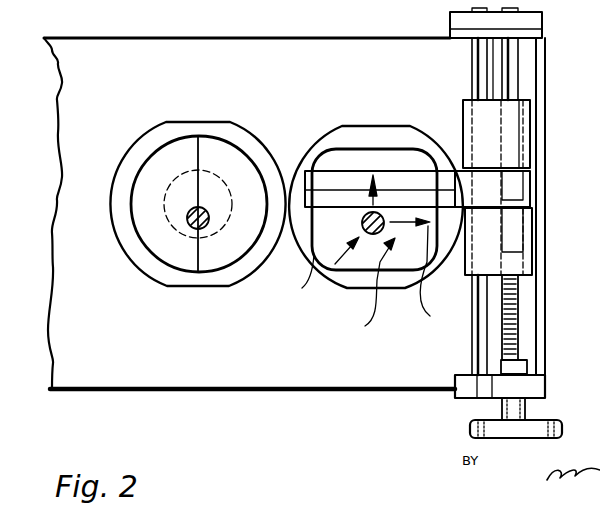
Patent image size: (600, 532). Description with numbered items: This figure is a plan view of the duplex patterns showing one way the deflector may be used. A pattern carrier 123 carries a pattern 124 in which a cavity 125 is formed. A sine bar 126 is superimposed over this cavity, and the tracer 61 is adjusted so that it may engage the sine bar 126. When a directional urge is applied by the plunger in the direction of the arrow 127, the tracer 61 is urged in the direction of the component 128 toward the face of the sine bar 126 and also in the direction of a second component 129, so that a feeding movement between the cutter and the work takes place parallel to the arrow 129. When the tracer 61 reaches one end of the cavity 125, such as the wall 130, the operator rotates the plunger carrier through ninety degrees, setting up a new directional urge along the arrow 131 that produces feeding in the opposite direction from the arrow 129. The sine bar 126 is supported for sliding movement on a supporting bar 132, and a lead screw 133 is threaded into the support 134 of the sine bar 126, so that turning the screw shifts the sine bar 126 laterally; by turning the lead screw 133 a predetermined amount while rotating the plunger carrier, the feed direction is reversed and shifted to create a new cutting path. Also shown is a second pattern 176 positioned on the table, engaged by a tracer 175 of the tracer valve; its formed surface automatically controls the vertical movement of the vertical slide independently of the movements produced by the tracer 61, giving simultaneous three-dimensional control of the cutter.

The tracer 61 is at (300, 279).
The pattern carrier 123 is at (163, 380).
The pattern 124 is at (377, 97).
The cavity 125 is at (438, 279).
The sine bar 126 is at (318, 200).
The arrow 127 is at (335, 264).
The component 128 is at (377, 188).
The arrow 129 is at (402, 222).
The wall 130 is at (432, 250).
The arrow 131 is at (365, 287).
The supporting bar 132 is at (471, 60).
The lead screw 133 is at (524, 306).
The support 134 is at (533, 250).
The tracer 175 is at (189, 226).
The pattern 176 is at (127, 151).